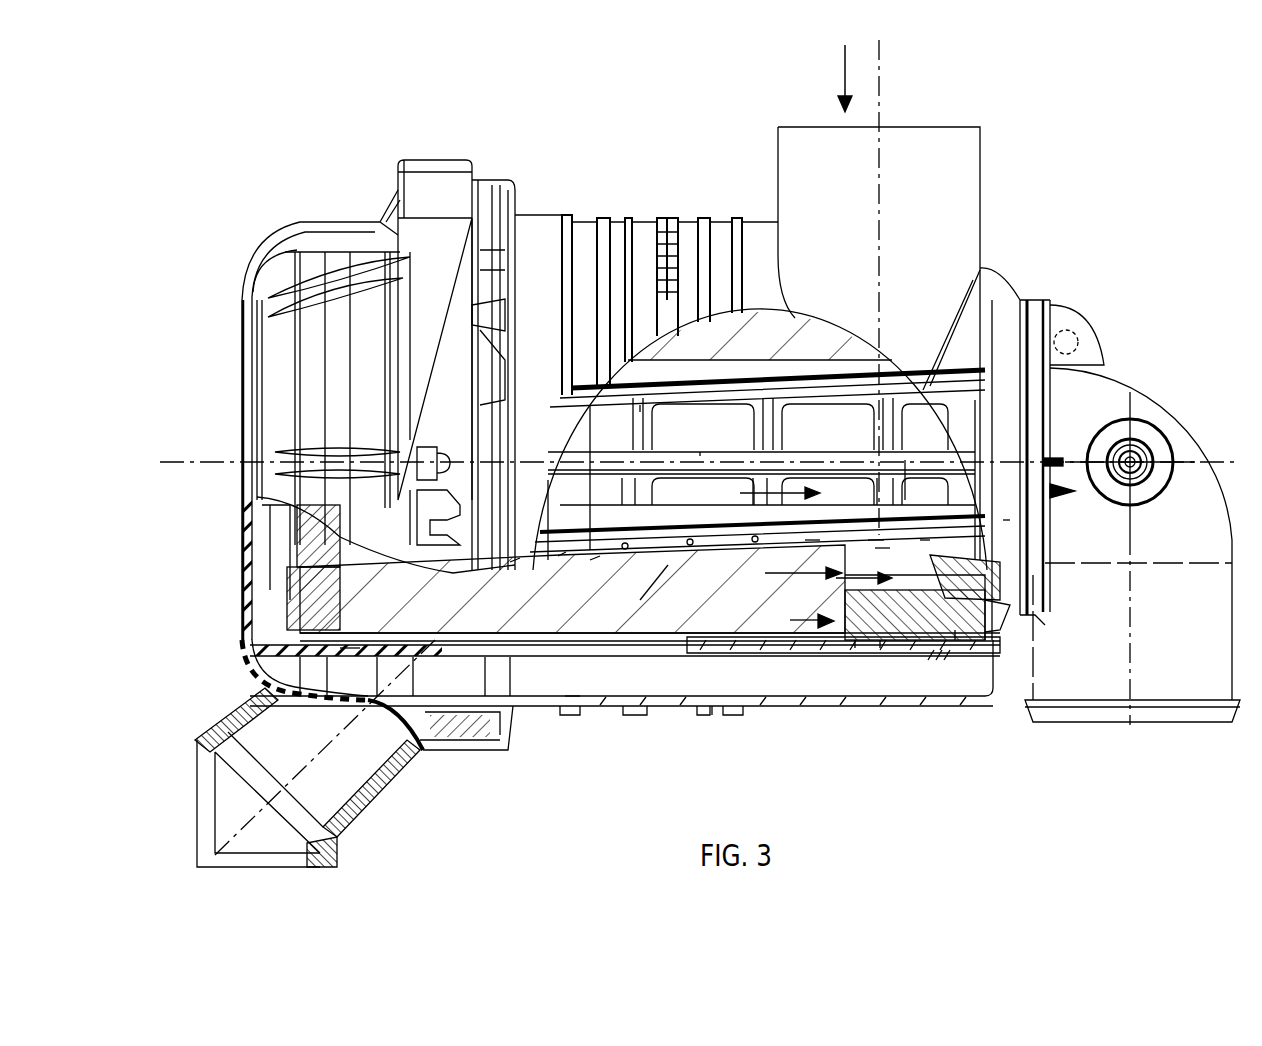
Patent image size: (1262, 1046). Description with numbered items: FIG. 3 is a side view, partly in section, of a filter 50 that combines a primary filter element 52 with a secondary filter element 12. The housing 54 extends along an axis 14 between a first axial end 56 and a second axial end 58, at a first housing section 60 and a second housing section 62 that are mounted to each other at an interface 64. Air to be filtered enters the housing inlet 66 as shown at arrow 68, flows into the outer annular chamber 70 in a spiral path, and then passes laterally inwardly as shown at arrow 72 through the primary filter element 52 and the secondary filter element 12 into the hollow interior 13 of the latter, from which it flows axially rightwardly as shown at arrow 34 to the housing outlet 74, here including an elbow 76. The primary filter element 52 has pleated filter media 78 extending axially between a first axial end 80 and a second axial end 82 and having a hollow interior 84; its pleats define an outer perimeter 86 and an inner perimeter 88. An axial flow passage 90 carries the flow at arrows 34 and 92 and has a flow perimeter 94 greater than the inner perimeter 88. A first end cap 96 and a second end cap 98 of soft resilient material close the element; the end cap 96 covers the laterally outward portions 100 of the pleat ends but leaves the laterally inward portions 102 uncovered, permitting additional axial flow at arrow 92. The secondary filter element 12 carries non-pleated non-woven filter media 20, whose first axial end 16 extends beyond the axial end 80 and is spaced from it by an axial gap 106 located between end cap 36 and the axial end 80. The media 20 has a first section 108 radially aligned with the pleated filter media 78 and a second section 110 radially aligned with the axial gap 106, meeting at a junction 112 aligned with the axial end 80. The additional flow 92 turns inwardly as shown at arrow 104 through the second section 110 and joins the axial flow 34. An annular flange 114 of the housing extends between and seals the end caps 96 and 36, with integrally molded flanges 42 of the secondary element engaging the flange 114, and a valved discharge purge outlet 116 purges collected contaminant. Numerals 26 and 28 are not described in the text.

The secondary filter element 12 is at (560, 556).
The hollow interior 13 is at (587, 500).
The axis 14 is at (218, 460).
The first axial end 16 is at (968, 517).
The non-pleated non-woven filter media 20 is at (668, 524).
The pleats 26 is at (645, 412).
The pleat ends 28 is at (704, 452).
The arrow 34 is at (830, 495).
The end cap 36 is at (1018, 544).
The integrally molded flanges 42 is at (938, 642).
The filter 50 is at (650, 208).
The primary filter element 52 is at (572, 707).
The housing 54 is at (542, 215).
The first axial end 56 is at (1032, 300).
The second axial end 58 is at (242, 292).
The first housing section 60 is at (786, 707).
The second housing section 62 is at (262, 662).
The interface 64 is at (440, 750).
The housing inlet 66 is at (778, 148).
The arrow 68 is at (845, 70).
The outer annular chamber 70 is at (712, 707).
The arrow 72 is at (590, 562).
The housing outlet 74 is at (1060, 722).
The elbow 76 is at (1112, 378).
The pleated filter media 78 is at (565, 641).
The first axial end 80 is at (858, 650).
The second axial end 82 is at (352, 650).
The hollow interior 84 is at (515, 561).
The outer perimeter 86 is at (690, 592).
The inner perimeter 88 is at (670, 566).
The axial flow passage 90 is at (916, 458).
The arrow 92 is at (838, 578).
The flow perimeter 94 is at (960, 612).
The first end cap 96 is at (890, 642).
The second end cap 98 is at (292, 612).
The laterally outward portions 100 is at (792, 621).
The laterally inward portions 102 is at (783, 576).
The arrow 104 is at (885, 546).
The axial gap 106 is at (832, 652).
The first section 108 is at (810, 536).
The second section 110 is at (921, 538).
The junction 112 is at (876, 536).
The annular flange 114 is at (965, 642).
The valved discharge purge outlet 116 is at (383, 794).